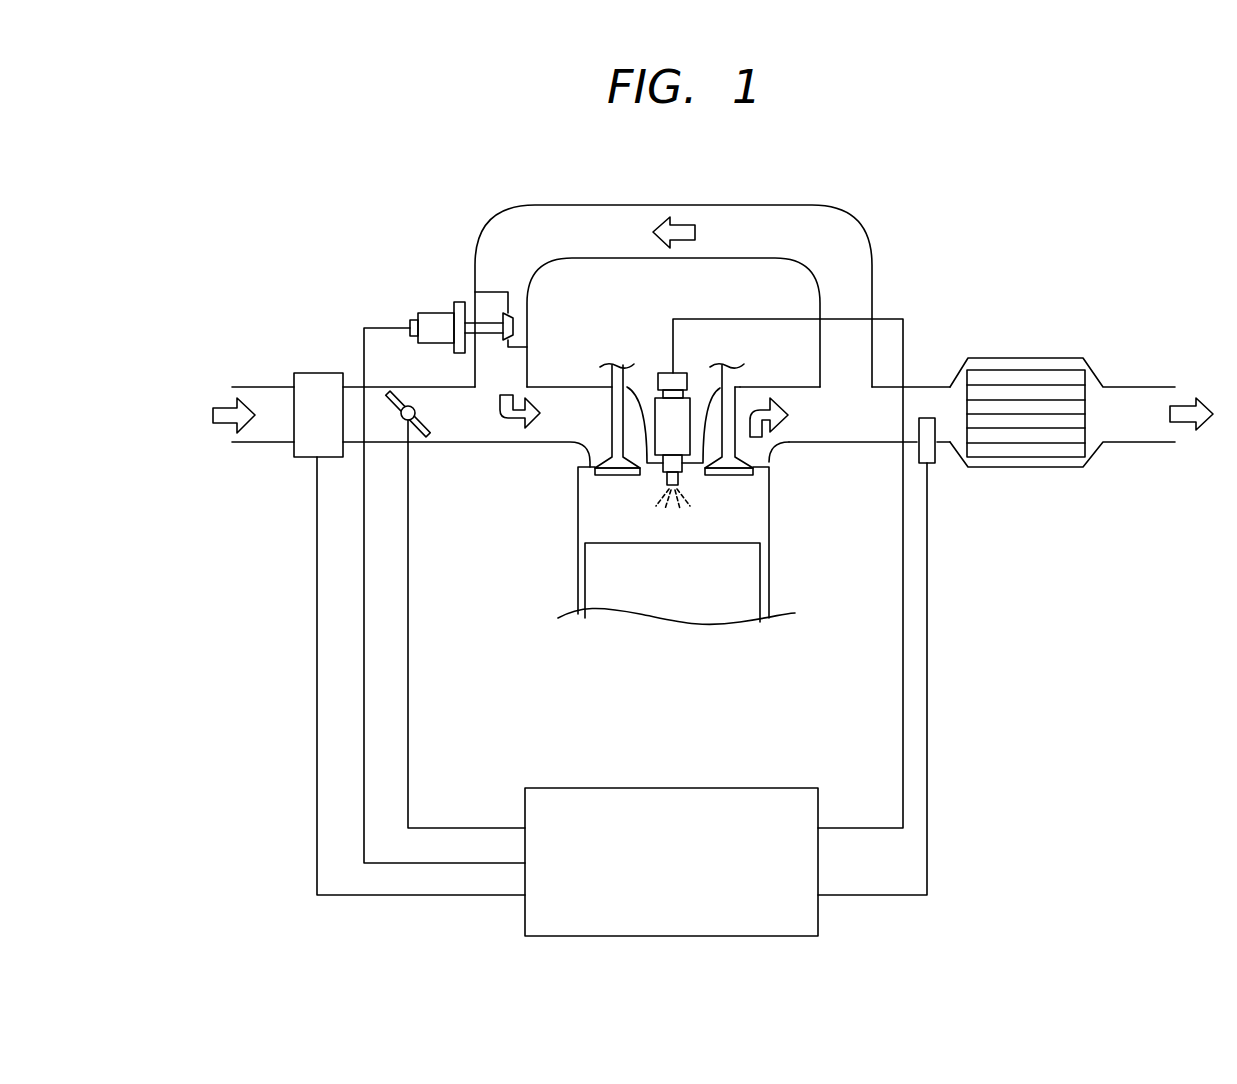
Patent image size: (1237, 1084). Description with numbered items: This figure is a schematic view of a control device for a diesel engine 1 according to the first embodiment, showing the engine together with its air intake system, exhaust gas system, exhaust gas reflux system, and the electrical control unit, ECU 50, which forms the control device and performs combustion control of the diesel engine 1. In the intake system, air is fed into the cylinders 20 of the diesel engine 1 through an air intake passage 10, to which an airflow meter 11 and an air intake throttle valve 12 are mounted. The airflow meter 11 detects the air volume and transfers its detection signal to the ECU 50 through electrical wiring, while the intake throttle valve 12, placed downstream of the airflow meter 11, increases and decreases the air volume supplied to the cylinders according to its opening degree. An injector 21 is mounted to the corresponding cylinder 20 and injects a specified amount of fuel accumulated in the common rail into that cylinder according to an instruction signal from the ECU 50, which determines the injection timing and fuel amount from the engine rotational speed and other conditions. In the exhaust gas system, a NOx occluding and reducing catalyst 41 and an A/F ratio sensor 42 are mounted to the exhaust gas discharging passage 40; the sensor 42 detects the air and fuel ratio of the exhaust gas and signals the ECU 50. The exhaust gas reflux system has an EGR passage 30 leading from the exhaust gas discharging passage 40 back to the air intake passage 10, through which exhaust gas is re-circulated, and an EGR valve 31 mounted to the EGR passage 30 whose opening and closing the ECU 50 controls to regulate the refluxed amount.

The diesel engine 1 is at (952, 219).
The air intake passage 10 is at (270, 387).
The airflow meter 11 is at (300, 460).
The air intake throttle valve 12 is at (429, 430).
The cylinder 20 is at (576, 525).
The injector 21 is at (662, 373).
The EGR passage 30 is at (737, 205).
The EGR valve 31 is at (430, 311).
The exhaust gas discharging passage 40 is at (1138, 387).
The NOx occluding and reducing catalyst 41 is at (1030, 370).
The A/F ratio sensor 42 is at (938, 456).
The electrical control unit (ECU) 50 is at (733, 788).